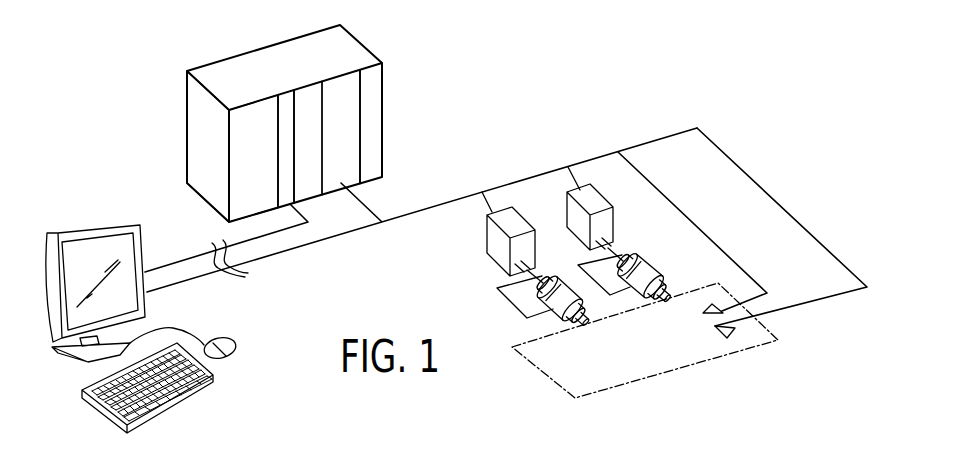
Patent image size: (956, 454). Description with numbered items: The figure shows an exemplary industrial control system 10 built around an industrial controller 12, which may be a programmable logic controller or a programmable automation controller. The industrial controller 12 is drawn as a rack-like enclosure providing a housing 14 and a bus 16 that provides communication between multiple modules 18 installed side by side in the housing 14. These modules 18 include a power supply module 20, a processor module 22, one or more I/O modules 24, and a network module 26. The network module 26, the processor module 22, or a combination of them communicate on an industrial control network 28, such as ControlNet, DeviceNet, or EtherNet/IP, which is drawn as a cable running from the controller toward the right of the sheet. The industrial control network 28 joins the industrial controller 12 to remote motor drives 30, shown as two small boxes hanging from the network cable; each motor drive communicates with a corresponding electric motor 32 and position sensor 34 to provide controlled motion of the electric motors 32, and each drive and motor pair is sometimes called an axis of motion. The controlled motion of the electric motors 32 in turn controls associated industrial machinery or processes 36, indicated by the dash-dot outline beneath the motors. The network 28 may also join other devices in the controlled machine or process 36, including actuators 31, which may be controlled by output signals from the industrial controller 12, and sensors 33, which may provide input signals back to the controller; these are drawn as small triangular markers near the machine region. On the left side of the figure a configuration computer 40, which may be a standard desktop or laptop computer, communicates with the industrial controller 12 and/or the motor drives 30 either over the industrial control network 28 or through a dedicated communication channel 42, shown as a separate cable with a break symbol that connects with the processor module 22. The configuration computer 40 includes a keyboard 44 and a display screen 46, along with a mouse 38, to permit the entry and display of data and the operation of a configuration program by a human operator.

The industrial control system 10 is at (656, 58).
The industrial controller 12 is at (362, 42).
The housing 14 is at (200, 118).
The bus 16 is at (177, 33).
The modules 18 is at (335, 88).
The power supply module 20 is at (243, 147).
The processor module 22 is at (288, 170).
The I/O modules 24 is at (312, 118).
The network module 26 is at (342, 155).
The industrial control network 28 is at (467, 192).
The motor drives 30 is at (600, 200).
The actuators 31 is at (712, 314).
The electric motors 32 is at (657, 278).
The sensors 33 is at (730, 338).
The position sensors 34 is at (630, 257).
The industrial machinery or processes 36 is at (669, 350).
The mouse 38 is at (211, 391).
The configuration computer 40 is at (52, 196).
The dedicated communication channel 42 is at (263, 236).
The keyboard 44 is at (102, 400).
The display screen 46 is at (100, 257).